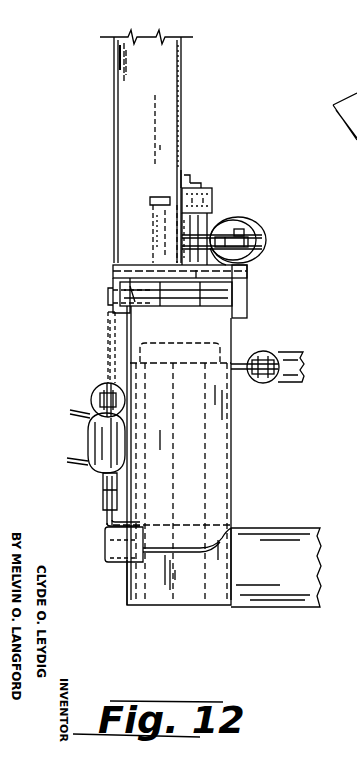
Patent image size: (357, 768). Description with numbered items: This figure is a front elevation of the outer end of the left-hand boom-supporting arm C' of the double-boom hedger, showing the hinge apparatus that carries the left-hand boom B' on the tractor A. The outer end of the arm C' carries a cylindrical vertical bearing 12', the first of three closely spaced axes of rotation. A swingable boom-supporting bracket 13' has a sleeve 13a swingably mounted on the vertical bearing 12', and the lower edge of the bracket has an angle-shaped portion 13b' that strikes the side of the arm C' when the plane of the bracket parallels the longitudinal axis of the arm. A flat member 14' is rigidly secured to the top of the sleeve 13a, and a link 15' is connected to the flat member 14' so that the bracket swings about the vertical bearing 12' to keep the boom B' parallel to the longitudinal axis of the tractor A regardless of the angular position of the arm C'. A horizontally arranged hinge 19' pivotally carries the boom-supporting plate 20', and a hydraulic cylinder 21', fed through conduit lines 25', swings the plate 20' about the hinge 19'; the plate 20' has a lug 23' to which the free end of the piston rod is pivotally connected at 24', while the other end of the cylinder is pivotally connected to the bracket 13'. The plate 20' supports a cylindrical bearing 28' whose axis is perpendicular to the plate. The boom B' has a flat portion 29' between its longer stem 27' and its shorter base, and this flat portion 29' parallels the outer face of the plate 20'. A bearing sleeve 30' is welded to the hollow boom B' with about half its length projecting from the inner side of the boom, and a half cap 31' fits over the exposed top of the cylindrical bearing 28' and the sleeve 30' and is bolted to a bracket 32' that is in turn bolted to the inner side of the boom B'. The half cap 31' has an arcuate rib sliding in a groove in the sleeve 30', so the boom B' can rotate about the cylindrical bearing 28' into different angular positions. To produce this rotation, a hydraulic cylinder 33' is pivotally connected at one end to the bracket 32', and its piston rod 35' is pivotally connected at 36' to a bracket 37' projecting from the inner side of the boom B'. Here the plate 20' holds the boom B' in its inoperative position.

The longer stem 27' is at (83, 57).
The boom B' is at (126, 146).
The bracket 32' is at (203, 161).
The half cap 31' is at (213, 187).
The pivotal connection 36' is at (251, 209).
The hydraulic cylinder 33' is at (258, 233).
The piston rod 35' is at (248, 241).
The bracket 37' is at (252, 260).
The cylindrical bearing 28' is at (110, 230).
The boom-supporting plate 20' is at (143, 289).
The hinge 19' is at (211, 291).
The flat portion 29' is at (156, 310).
The bearing sleeve 30' is at (203, 304).
The lug 23' is at (87, 419).
The pivotal connection 24' is at (70, 400).
The conduit lines 25' is at (51, 449).
The hydraulic cylinder 21' is at (70, 443).
The flat member 14' is at (259, 353).
The link 15' is at (304, 355).
The swingable boom-supporting bracket 13' is at (209, 394).
The cylindrical vertical bearing 12' is at (203, 455).
The sleeve 13a is at (233, 500).
The angle-shaped portion 13b' is at (138, 543).
The tractor A is at (297, 530).
The boom-supporting arm C' is at (114, 606).